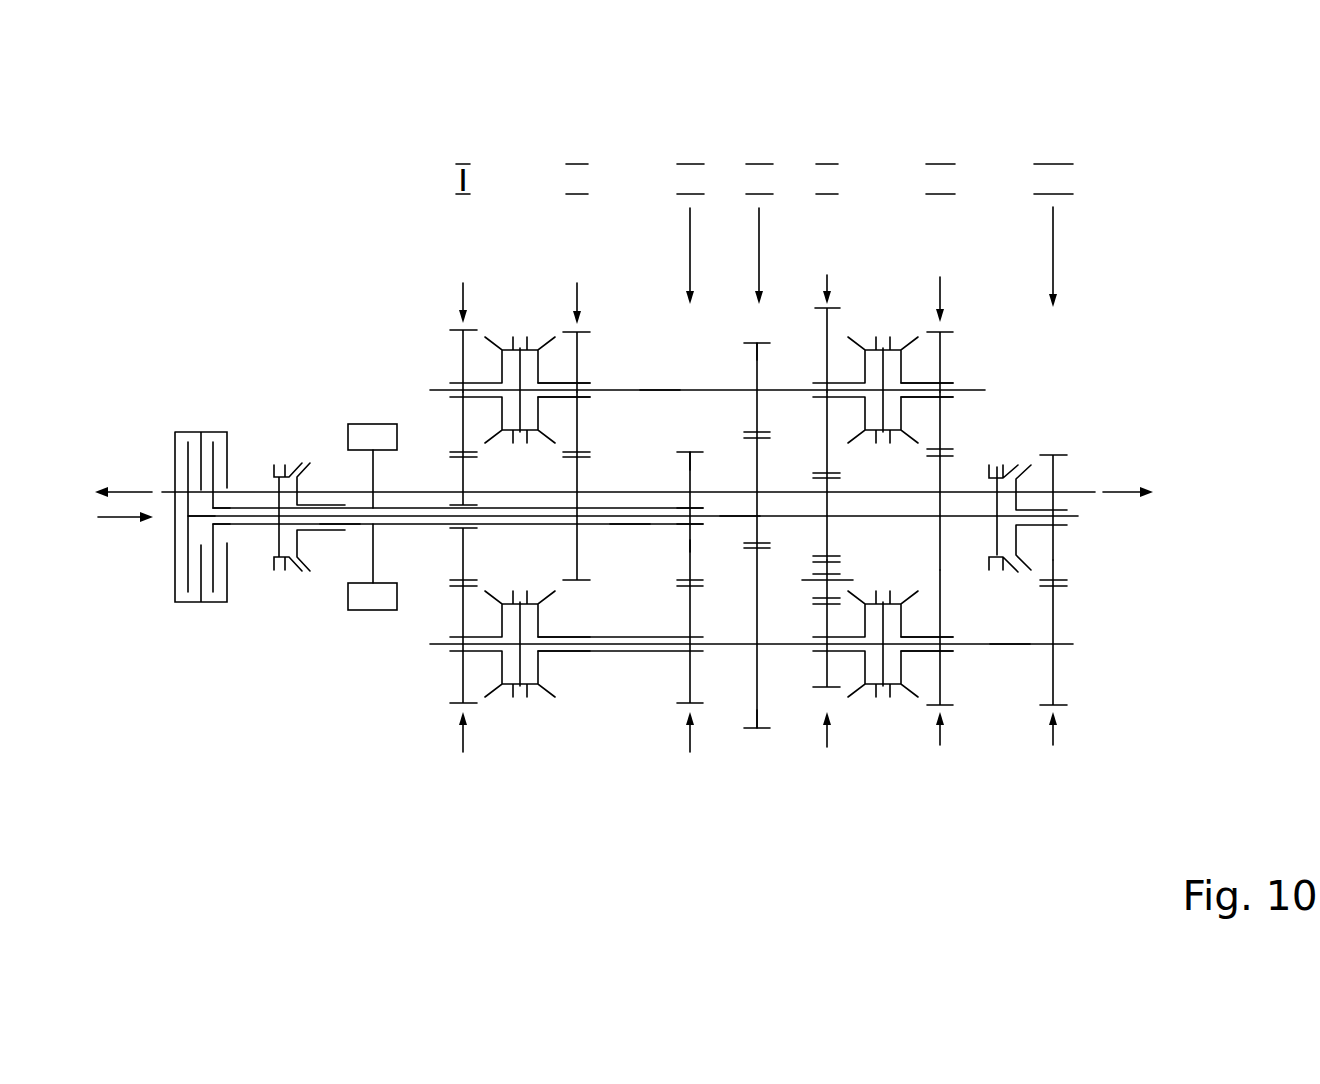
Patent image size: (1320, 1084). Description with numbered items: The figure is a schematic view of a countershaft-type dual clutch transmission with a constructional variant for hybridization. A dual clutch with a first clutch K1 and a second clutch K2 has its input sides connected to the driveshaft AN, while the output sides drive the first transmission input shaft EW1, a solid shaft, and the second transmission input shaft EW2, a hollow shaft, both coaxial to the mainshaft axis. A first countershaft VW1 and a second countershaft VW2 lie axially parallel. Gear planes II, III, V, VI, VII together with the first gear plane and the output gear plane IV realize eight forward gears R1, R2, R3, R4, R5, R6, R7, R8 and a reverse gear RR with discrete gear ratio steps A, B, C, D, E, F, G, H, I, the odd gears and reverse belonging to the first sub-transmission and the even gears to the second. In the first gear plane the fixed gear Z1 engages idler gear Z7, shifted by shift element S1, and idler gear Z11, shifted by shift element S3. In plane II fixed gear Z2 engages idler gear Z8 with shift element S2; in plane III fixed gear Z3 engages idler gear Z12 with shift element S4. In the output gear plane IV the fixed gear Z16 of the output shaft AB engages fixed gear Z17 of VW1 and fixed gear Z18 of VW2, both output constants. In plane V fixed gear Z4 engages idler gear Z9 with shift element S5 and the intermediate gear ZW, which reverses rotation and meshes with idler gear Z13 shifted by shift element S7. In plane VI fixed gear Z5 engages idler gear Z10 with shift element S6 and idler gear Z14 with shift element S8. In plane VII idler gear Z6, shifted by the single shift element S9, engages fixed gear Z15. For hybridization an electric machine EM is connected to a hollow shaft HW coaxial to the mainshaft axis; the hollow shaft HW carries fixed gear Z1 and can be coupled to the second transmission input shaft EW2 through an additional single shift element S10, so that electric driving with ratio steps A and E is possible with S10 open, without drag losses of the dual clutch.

The first clutch K1 is at (183, 413).
The second clutch K2 is at (214, 413).
The electric machine EM is at (367, 433).
The driveshaft AN is at (125, 536).
The output shaft AB is at (1068, 490).
The first transmission input shaft EW1 is at (743, 514).
The second transmission input shaft EW2 is at (630, 526).
The hollow shaft HW is at (340, 526).
The first countershaft VW1 is at (658, 388).
The second countershaft VW2 is at (1008, 646).
The intermediate gear ZW is at (826, 588).
The fixed gear Z1 is at (458, 466).
The fixed gear Z2 is at (583, 584).
The fixed gear Z3 is at (686, 702).
The fixed gear Z4 is at (823, 530).
The fixed gear Z5 is at (945, 565).
The idler gear Z6 is at (1055, 543).
The idler gear Z7 is at (453, 328).
The idler gear Z8 is at (585, 330).
The idler gear Z9 is at (835, 308).
The idler gear Z10 is at (945, 368).
The idler gear Z11 is at (453, 706).
The idler gear Z12 is at (692, 546).
The idler gear Z13 is at (828, 688).
The idler gear Z14 is at (933, 704).
The fixed gear Z15 is at (1058, 590).
The fixed gear Z16 is at (690, 450).
The fixed gear Z17 is at (757, 342).
The fixed gear Z18 is at (765, 728).
The shift element S1 is at (520, 375).
The shift element S2 is at (564, 352).
The shift element S3 is at (520, 659).
The shift element S4 is at (620, 682).
The shift element S5 is at (883, 375).
The shift element S6 is at (927, 352).
The shift element S7 is at (883, 659).
The shift element S8 is at (927, 682).
The single shift element S9 is at (1028, 502).
The additional single shift element S10 is at (309, 503).
The second gear plane II is at (577, 180).
The third gear plane III is at (690, 233).
The output gear plane IV is at (759, 233).
The fifth gear plane V is at (827, 180).
The sixth gear plane VI is at (940, 180).
The seventh gear plane VII is at (1053, 235).
The first forward gear R1 is at (826, 224).
The second forward gear R2 is at (690, 810).
The third forward gear R3 is at (1053, 810).
The fourth forward gear R4 is at (577, 224).
The fifth forward gear R5 is at (940, 810).
The sixth forward gear R6 is at (463, 810).
The seventh forward gear R7 is at (940, 224).
The eighth forward gear R8 is at (463, 224).
The reverse gear RR is at (827, 810).
The gear ratio step A is at (463, 282).
The gear ratio step B is at (577, 283).
The gear ratio step C is at (827, 273).
The gear ratio step D is at (940, 282).
The gear ratio step E is at (463, 751).
The gear ratio step F is at (690, 751).
The gear ratio step G is at (827, 751).
The gear ratio step H is at (940, 751).
The gear ratio step I is at (1053, 751).